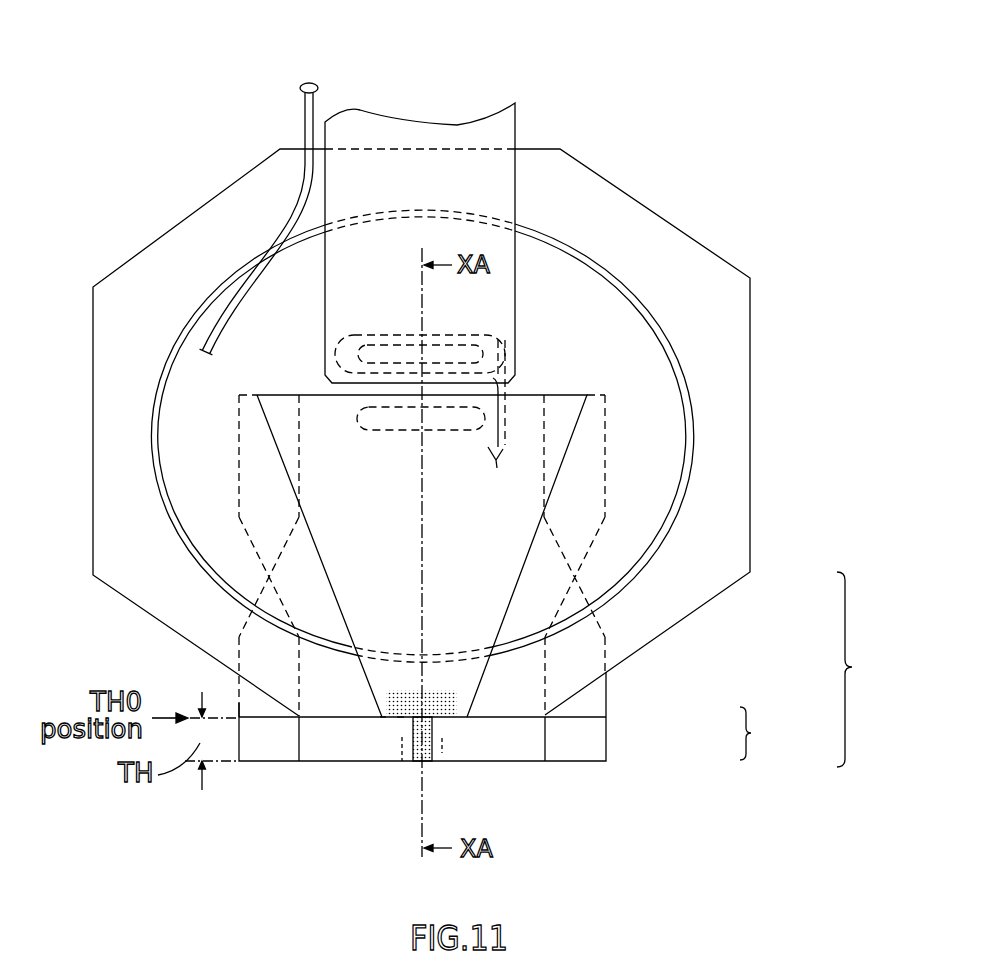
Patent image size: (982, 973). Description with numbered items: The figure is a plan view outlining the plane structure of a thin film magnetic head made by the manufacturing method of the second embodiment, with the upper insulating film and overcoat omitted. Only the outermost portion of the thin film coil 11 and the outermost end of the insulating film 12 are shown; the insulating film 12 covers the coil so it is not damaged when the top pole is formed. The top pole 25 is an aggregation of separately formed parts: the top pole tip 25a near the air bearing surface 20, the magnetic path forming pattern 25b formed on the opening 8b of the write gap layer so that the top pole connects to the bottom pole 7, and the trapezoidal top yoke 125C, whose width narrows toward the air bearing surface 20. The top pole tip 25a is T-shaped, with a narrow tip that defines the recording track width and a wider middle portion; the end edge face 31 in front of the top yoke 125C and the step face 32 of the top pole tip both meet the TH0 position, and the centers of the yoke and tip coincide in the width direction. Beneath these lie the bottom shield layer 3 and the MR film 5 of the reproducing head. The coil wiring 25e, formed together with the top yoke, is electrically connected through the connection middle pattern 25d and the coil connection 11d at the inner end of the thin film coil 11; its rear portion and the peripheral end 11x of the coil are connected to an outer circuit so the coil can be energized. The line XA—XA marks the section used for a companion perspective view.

The insulating film 12 is at (138, 260).
The thin film coil 11 is at (643, 308).
The peripheral end 11x is at (307, 88).
The coil connection 11d is at (500, 355).
The coil wiring 25e is at (515, 197).
The connection middle pattern 25d is at (378, 347).
The opening 8b is at (388, 432).
The magnetic path forming pattern 25b is at (437, 420).
The bottom pole 7 is at (272, 552).
The top yoke 125C is at (502, 580).
The air bearing surface 20 is at (257, 766).
The bottom shield layer 3 is at (243, 703).
The top pole tip 25a is at (778, 733).
The top pole 25 is at (868, 669).
The end edge face 31 is at (382, 718).
The step face 32 is at (400, 718).
The MR film 5 is at (401, 762).